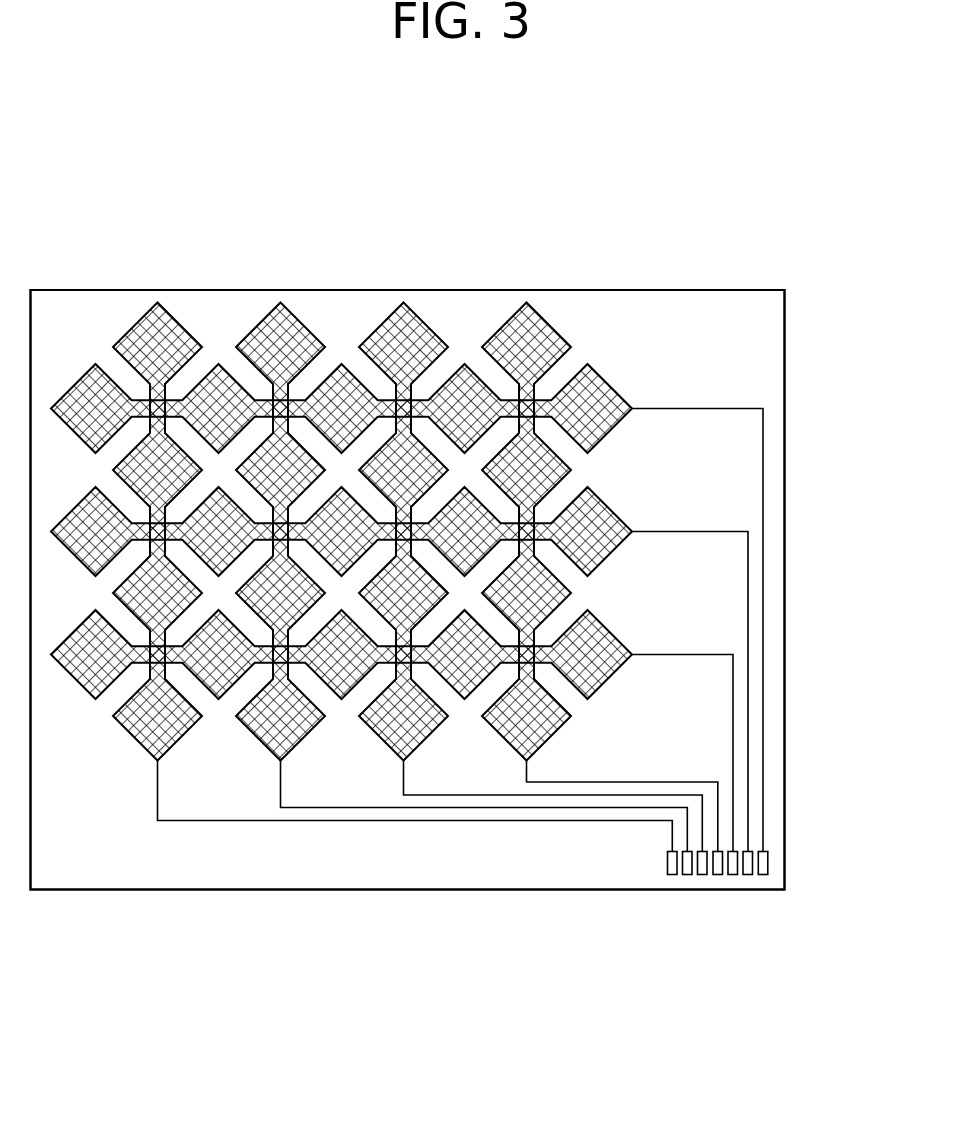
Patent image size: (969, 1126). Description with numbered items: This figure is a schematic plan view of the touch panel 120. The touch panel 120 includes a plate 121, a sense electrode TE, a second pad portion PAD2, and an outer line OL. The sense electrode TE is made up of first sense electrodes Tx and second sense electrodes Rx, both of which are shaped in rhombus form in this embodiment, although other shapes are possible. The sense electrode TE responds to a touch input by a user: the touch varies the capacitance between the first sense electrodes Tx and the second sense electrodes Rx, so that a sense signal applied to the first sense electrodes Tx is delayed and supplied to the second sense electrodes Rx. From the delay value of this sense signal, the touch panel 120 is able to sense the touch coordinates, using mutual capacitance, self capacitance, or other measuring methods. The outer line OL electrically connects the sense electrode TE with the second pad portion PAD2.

The touch panel 120 is at (698, 268).
The plate 121 is at (773, 737).
The sense electrode TE is at (469, 532).
The second sense electrodes Rx is at (552, 577).
The first sense electrodes Tx is at (613, 628).
The outer line OL is at (763, 466).
The second pad portion PAD2 is at (763, 875).